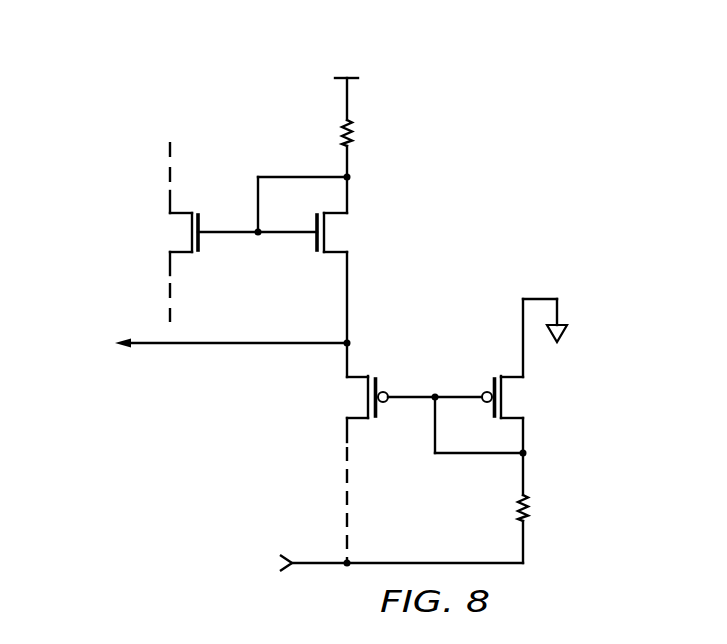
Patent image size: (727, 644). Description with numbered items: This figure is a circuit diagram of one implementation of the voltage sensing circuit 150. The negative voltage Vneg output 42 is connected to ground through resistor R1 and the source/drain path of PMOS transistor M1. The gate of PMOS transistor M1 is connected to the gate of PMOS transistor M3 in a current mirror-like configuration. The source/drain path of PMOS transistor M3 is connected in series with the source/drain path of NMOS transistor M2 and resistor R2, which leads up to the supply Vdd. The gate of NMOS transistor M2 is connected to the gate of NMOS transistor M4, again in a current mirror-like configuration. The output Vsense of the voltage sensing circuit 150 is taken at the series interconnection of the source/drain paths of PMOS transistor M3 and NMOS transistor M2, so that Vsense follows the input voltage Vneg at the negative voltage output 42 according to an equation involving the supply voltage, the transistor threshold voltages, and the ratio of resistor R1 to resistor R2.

The negative voltage output 42 is at (317, 562).
The voltage sensing circuit 150 is at (357, 310).
The PMOS transistor M1 is at (517, 397).
The NMOS transistor M2 is at (345, 232).
The PMOS transistor M3 is at (352, 397).
The NMOS transistor M4 is at (167, 232).
The resistor R1 is at (539, 507).
The resistor R2 is at (362, 133).